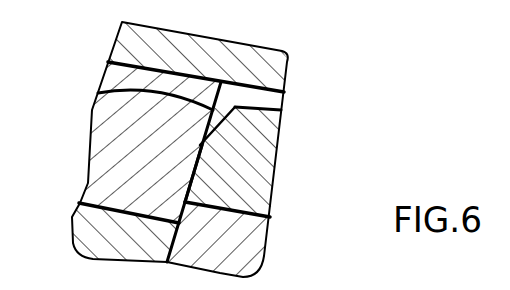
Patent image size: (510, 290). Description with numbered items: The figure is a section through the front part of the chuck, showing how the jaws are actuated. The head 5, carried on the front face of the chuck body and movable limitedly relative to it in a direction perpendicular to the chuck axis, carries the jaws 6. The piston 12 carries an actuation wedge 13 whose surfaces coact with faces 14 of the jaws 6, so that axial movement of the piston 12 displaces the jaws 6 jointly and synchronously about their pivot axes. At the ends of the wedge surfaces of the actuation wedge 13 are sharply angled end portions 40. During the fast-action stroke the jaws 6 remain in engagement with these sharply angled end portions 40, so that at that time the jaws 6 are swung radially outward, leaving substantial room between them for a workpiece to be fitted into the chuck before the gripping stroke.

The sharply angled end portions 40 is at (98, 93).
The jaws 6 is at (112, 145).
The actuation wedge 13 is at (257, 145).
The faces 14 is at (192, 174).
The piston 12 is at (243, 244).
The head 5 is at (92, 238).